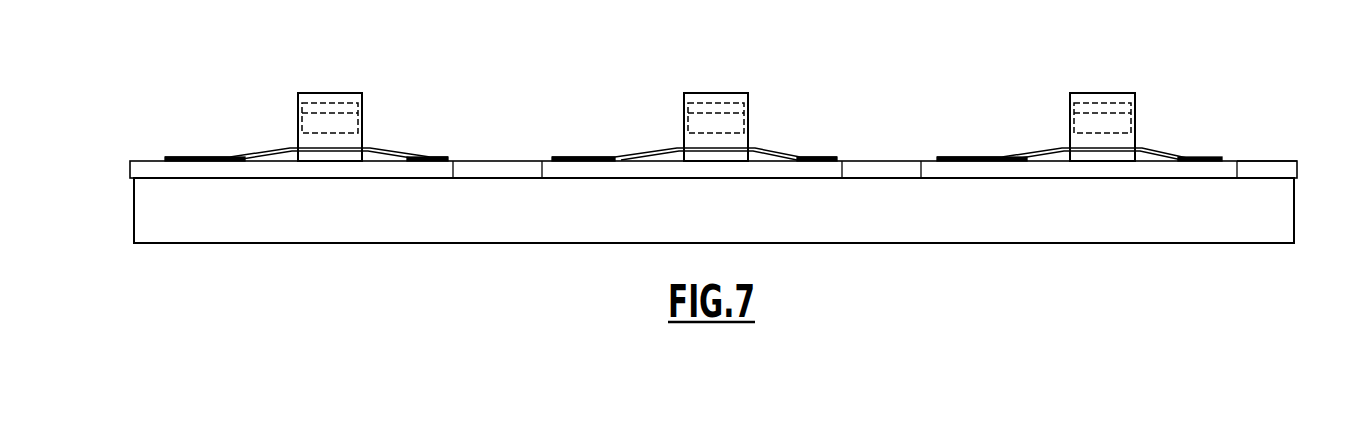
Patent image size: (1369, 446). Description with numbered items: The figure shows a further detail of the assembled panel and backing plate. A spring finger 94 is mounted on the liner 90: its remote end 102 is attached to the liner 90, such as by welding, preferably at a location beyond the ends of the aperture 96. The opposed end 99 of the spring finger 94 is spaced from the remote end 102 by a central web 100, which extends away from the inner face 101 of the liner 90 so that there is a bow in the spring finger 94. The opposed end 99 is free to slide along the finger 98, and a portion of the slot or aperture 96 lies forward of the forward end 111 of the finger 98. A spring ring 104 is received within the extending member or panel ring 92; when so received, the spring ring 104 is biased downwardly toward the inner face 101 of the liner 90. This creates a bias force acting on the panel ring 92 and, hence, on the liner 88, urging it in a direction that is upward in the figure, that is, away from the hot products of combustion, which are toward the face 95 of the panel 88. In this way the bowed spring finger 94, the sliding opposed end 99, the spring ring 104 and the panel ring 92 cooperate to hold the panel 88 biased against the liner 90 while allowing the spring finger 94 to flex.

The liner 88 is at (1282, 200).
The liner 90 is at (130, 166).
The panel ring 92 is at (342, 93).
The spring finger 94 is at (234, 120).
The face 95 is at (1027, 243).
The aperture 96 is at (502, 161).
The finger 98 is at (373, 163).
The opposed end 99 is at (446, 157).
The central web 100 is at (370, 150).
The inner face 101 is at (552, 157).
The remote end 102 is at (187, 157).
The spring ring 104 is at (333, 122).
The forward end 111 is at (452, 178).